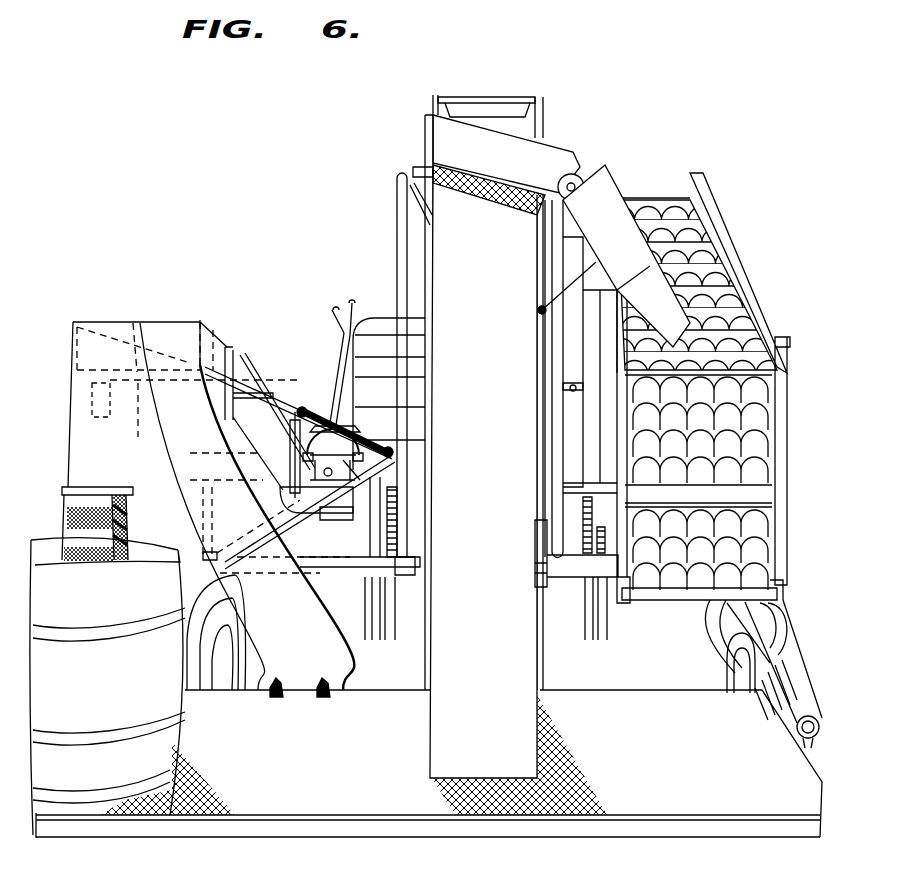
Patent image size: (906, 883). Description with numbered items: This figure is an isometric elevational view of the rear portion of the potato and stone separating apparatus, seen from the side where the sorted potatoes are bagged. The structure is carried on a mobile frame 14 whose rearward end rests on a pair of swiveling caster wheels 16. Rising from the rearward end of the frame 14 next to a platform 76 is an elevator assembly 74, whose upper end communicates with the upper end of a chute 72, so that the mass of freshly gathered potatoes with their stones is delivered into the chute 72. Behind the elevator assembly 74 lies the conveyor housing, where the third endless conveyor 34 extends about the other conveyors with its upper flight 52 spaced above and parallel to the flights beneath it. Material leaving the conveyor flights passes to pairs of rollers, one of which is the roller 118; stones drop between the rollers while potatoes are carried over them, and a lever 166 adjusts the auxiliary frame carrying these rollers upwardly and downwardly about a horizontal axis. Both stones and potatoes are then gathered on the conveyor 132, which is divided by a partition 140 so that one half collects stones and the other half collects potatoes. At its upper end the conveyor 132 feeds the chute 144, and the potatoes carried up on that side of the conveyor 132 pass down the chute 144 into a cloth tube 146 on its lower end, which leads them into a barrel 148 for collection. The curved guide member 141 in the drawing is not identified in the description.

The mobile frame 14 is at (782, 665).
The swiveling caster wheels 16 is at (203, 673).
The third endless conveyor 34 is at (742, 445).
The upper flight 52 is at (718, 283).
The chute 72 is at (607, 192).
The elevator assembly 74 is at (475, 457).
The platform 76 is at (660, 767).
The roller 118 is at (385, 394).
The conveyor 132 is at (188, 328).
The partition 140 is at (140, 335).
The curved guide 141 is at (302, 633).
The chute 144 is at (107, 463).
The cloth tube 146 is at (128, 520).
The barrel 148 is at (146, 614).
The lever 166 is at (330, 410).